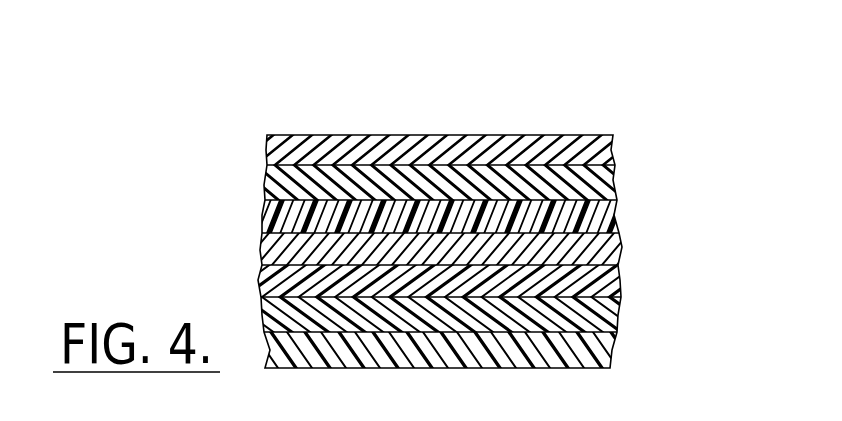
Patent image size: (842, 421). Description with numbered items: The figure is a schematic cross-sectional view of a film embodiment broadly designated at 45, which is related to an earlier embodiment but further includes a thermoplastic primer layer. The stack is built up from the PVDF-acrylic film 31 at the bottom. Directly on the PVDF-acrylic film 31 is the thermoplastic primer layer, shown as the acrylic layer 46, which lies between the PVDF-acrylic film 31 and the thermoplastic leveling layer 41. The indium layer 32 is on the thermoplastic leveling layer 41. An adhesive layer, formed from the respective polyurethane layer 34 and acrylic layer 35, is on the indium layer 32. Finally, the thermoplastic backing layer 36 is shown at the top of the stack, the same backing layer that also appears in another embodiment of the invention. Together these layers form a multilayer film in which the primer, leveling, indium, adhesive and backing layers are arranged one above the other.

The film embodiment 45 is at (538, 113).
The thermoplastic backing layer 36 is at (613, 151).
The acrylic layer 35 is at (615, 181).
The polyurethane layer 34 is at (617, 213).
The indium layer 32 is at (622, 247).
The thermoplastic leveling layer 41 is at (620, 281).
The acrylic layer 46 is at (620, 306).
The PVDF-acrylic film 31 is at (610, 348).